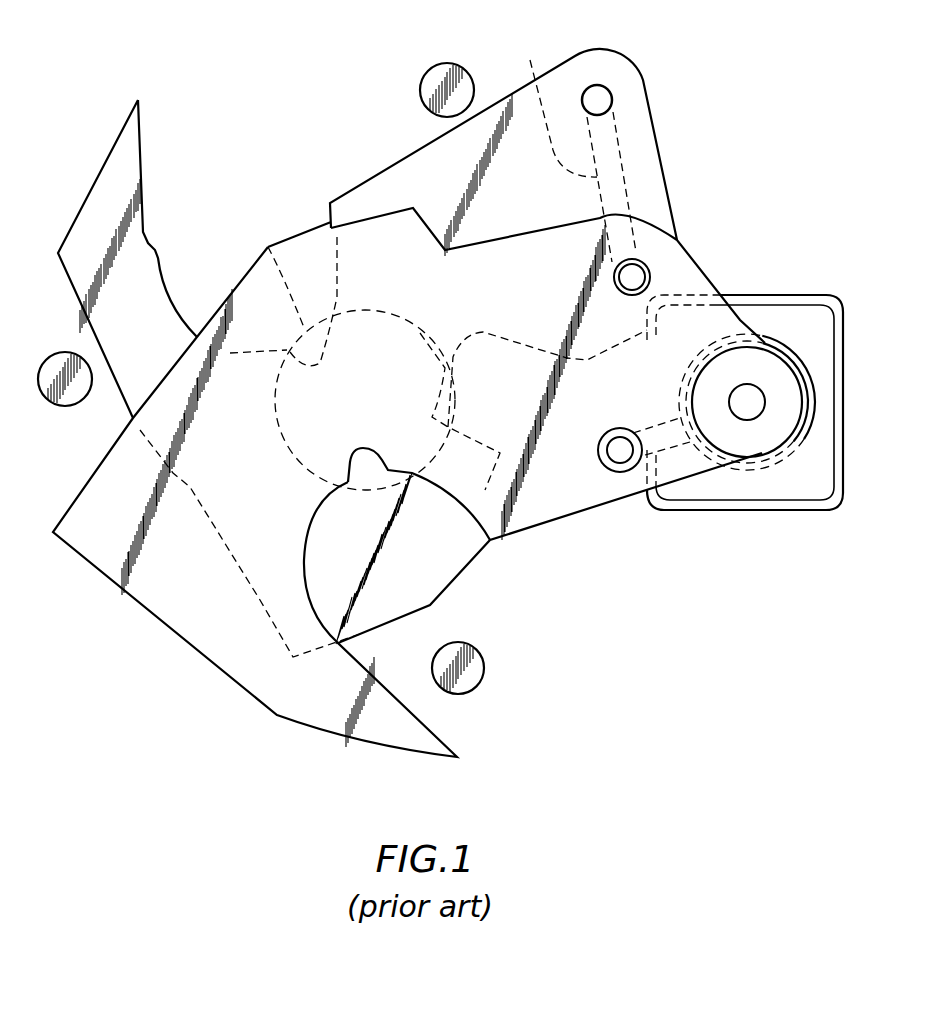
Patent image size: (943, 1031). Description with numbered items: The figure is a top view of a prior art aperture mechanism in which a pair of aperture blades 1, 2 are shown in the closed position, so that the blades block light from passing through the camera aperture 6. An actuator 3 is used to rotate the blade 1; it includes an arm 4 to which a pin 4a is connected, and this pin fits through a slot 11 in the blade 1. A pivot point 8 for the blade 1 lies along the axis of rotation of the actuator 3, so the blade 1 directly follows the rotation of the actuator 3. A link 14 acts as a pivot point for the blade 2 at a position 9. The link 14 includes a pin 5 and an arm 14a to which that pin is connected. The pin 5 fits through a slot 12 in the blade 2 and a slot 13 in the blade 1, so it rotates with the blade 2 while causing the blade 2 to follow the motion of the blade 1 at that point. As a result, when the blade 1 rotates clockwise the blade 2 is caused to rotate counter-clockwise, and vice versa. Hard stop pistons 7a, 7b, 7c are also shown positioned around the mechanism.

The aperture blade 1 is at (178, 600).
The aperture blade 2 is at (130, 172).
The actuator 3 is at (750, 510).
The arm 4 is at (658, 510).
The pin 4a is at (623, 463).
The pin 5 is at (647, 267).
The camera aperture 6 is at (262, 241).
The hard stop piston 7a is at (482, 682).
The hard stop piston 7b is at (88, 386).
The hard stop piston 7c is at (430, 67).
The pivot point 8 is at (747, 400).
The position 9 is at (603, 92).
The slot 11 is at (605, 458).
The slot 12 is at (653, 280).
The slot 13 is at (632, 243).
The link 14 is at (630, 150).
The arm 14a is at (530, 60).